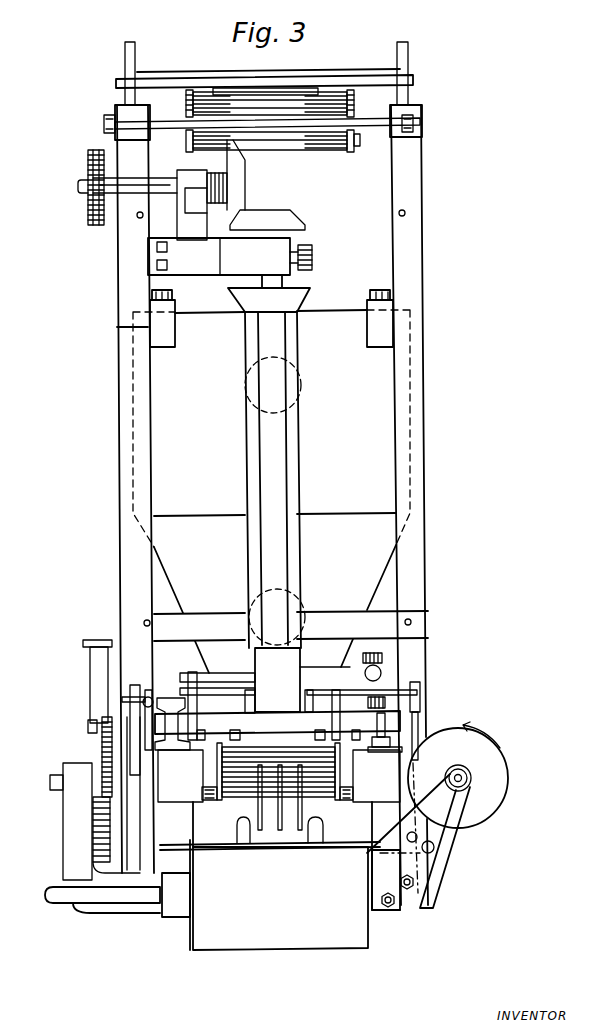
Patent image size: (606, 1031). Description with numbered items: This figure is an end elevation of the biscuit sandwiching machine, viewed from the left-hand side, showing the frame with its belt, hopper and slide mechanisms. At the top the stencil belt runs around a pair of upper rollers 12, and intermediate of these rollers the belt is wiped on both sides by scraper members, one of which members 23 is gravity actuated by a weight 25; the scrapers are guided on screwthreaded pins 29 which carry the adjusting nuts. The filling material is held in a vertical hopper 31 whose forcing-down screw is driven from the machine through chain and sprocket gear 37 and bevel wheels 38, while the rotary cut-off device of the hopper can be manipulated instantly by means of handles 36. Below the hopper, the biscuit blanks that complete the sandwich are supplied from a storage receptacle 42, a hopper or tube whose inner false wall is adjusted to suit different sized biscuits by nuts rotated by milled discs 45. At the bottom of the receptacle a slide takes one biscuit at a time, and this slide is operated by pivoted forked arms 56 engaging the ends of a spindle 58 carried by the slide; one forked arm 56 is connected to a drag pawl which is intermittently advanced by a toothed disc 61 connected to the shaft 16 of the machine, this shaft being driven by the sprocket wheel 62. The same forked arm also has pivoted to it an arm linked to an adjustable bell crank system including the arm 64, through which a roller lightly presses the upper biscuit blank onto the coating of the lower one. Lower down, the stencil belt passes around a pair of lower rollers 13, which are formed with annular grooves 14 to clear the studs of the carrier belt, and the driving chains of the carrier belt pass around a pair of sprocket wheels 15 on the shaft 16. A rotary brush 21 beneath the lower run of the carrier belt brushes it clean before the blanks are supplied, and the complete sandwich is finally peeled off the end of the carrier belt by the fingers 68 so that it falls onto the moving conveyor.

The upper rollers 12 is at (288, 141).
The lower rollers 13 is at (243, 727).
The annular grooves 14 is at (218, 733).
The sprocket wheels 15 is at (222, 818).
The shaft 16 is at (64, 790).
The rotary brush 21 is at (280, 898).
The scraper member 23 is at (413, 80).
The weight 25 is at (363, 63).
The pins 29 is at (136, 48).
The vertical hopper 31 is at (271, 461).
The handles 36 is at (383, 656).
The chain and sprocket gear 37 is at (98, 224).
The bevel wheels 38 is at (242, 188).
The storage receptacle 42 is at (295, 432).
The milled discs 45 is at (300, 392).
The forked arms 56 is at (137, 708).
The spindle 58 is at (421, 690).
The toothed disc 61 is at (120, 832).
The sprocket wheel 62 is at (108, 747).
The bell crank arm 64 is at (148, 692).
The fingers 68 is at (292, 765).